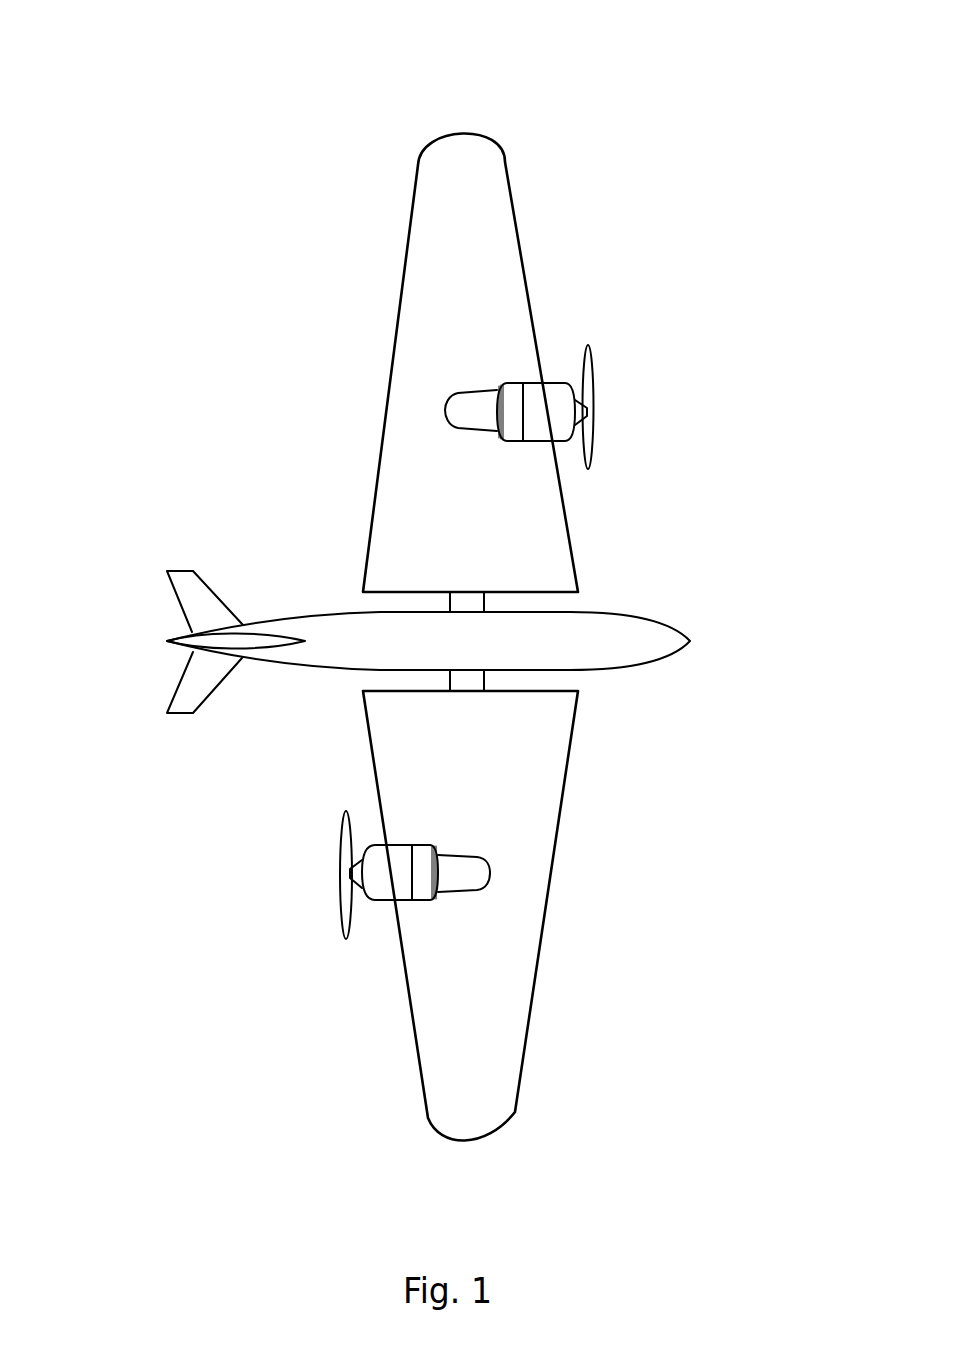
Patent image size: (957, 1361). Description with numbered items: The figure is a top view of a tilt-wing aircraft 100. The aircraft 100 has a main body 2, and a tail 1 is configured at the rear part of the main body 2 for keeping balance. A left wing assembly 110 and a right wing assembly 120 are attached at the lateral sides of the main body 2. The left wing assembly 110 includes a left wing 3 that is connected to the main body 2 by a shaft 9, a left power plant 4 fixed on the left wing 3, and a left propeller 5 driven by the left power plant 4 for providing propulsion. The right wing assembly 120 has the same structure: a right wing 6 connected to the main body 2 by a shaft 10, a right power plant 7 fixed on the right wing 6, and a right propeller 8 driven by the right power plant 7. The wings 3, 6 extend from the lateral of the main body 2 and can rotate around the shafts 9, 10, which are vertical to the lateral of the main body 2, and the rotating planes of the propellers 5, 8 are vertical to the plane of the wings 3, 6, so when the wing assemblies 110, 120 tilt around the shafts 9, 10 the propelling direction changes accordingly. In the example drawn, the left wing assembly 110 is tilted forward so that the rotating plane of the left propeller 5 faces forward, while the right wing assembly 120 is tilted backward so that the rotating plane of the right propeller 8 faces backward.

The aircraft 100 is at (190, 56).
The left wing assembly 110 is at (597, 121).
The right wing assembly 120 is at (637, 1089).
The tail 1 is at (254, 632).
The main body 2 is at (325, 643).
The left wing 3 is at (453, 305).
The left power plant 4 is at (535, 408).
The left propeller 5 is at (593, 380).
The right wing 6 is at (520, 745).
The right power plant 7 is at (395, 873).
The right propeller 8 is at (345, 835).
The shaft 9 is at (472, 603).
The shaft 10 is at (472, 678).